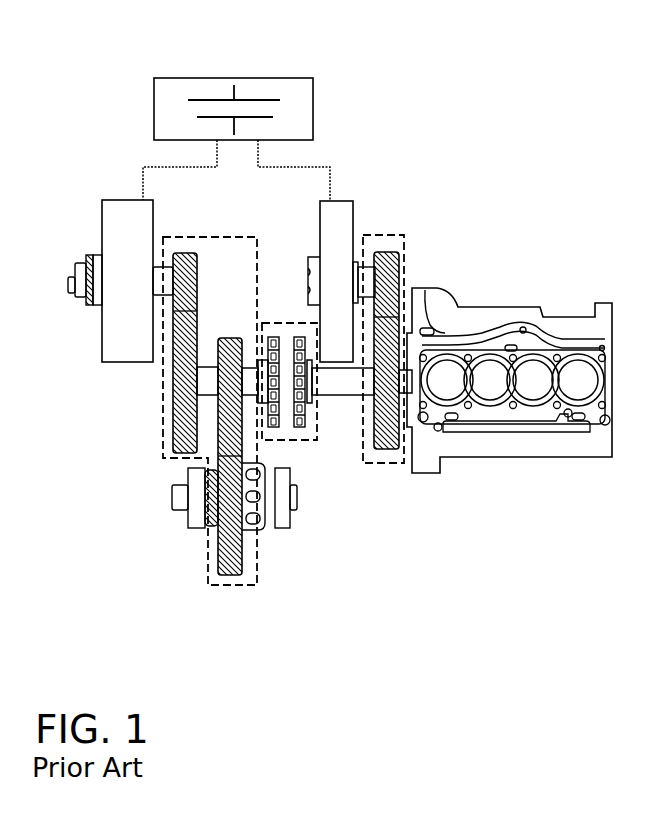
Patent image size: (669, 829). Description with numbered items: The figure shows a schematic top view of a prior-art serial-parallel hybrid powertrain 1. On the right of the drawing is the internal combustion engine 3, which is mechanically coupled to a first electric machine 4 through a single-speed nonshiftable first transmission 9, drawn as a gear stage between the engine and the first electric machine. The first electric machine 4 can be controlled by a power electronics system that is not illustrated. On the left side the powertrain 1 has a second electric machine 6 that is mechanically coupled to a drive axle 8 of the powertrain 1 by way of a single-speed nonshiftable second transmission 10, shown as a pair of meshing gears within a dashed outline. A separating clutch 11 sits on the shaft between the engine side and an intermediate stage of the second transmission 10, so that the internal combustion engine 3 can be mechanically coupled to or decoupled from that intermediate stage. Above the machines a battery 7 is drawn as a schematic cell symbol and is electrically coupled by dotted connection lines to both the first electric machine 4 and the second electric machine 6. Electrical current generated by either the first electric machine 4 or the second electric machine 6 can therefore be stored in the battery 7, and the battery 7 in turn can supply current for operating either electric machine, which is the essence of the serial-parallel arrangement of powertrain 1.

The serial-parallel hybrid powertrain 1 is at (446, 96).
The internal combustion engine 3 is at (546, 347).
The first electric machine 4 is at (337, 213).
The second electric machine 6 is at (122, 340).
The battery 7 is at (253, 90).
The drive axle 8 is at (294, 498).
The first transmission 9 is at (391, 222).
The second transmission 10 is at (205, 596).
The separating clutch 11 is at (313, 451).